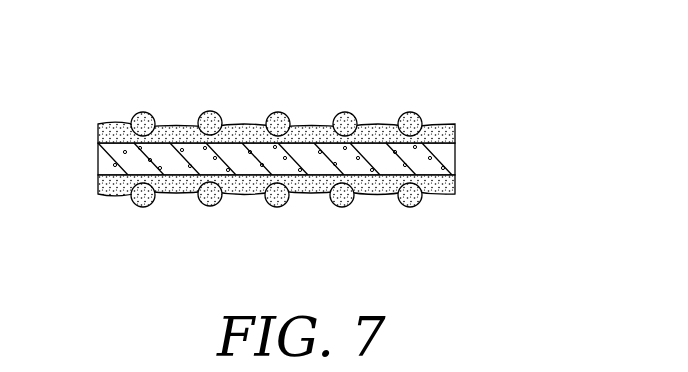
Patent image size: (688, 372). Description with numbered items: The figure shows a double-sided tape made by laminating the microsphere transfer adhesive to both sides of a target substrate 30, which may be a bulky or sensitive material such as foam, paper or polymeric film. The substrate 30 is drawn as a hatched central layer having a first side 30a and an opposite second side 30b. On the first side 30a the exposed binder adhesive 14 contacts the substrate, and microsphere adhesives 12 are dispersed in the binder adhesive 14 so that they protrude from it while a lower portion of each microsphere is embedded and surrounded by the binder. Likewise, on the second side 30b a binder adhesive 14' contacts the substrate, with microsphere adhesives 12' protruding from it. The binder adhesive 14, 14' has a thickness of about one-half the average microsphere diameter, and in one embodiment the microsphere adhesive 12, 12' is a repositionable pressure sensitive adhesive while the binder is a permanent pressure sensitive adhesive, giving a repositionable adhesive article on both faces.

The microsphere adhesive 12 is at (276, 92).
The microsphere adhesive 12' is at (276, 230).
The binder adhesive 14 is at (254, 88).
The binder adhesive 14' is at (258, 232).
The target substrate 30 is at (456, 160).
The first side of the target substrate 30a is at (456, 128).
The second side of the target substrate 30b is at (456, 192).